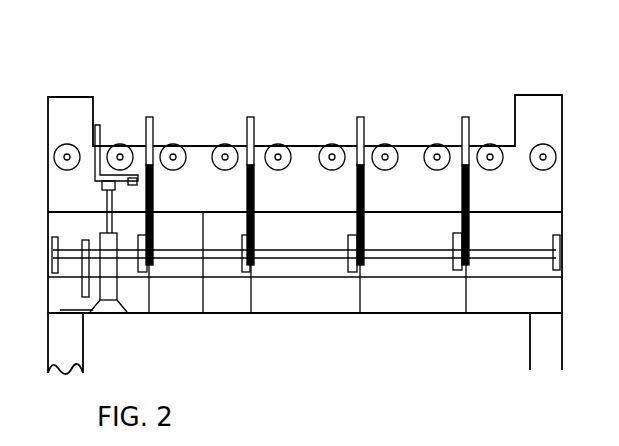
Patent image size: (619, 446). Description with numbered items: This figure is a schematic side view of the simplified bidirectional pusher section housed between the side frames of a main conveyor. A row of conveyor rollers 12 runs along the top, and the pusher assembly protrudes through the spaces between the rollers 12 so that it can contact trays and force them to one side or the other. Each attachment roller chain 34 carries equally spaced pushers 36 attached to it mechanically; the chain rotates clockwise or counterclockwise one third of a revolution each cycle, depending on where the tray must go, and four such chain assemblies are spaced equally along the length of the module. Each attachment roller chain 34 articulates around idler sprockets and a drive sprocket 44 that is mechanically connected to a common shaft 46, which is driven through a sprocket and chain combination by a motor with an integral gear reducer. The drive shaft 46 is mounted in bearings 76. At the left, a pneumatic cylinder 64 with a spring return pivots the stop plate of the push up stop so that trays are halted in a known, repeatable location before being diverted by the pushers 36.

The rollers 12 is at (223, 143).
The attachment roller chain 34 is at (155, 192).
The pushers 36 is at (462, 117).
The drive sprocket 44 is at (365, 265).
The shaft 46 is at (307, 258).
The pneumatic cylinder 64 is at (117, 268).
The bearings 76 is at (358, 263).